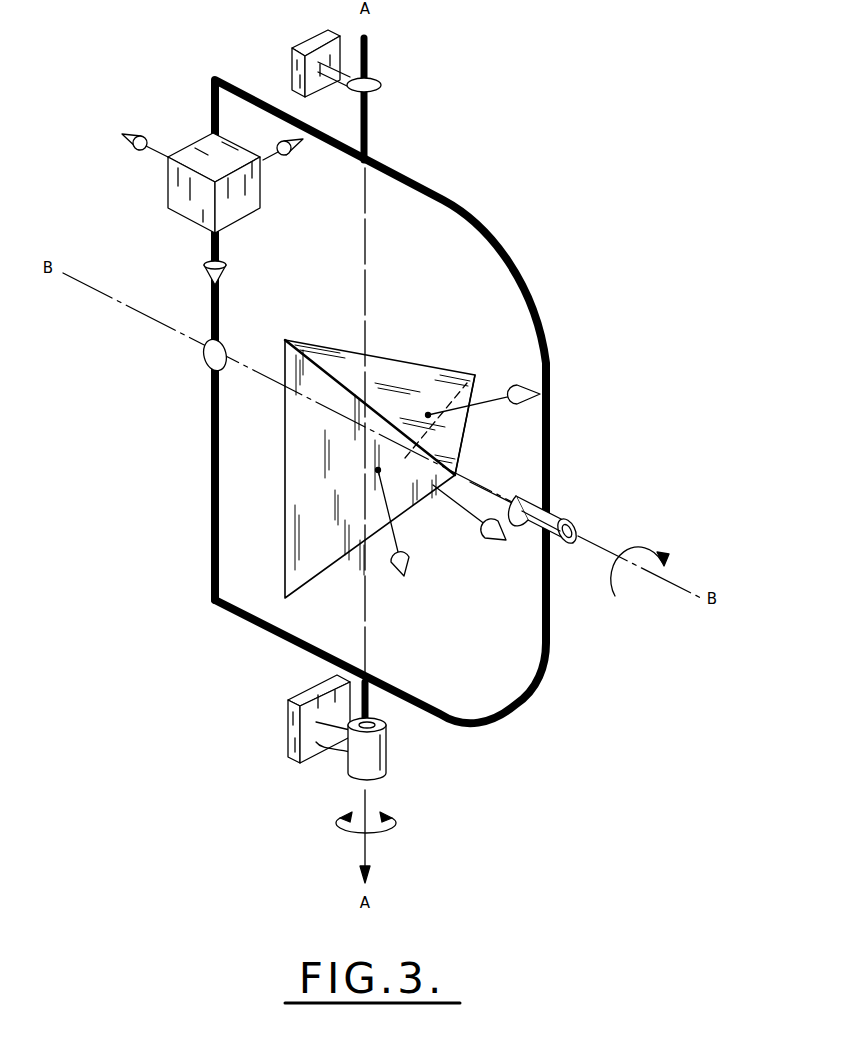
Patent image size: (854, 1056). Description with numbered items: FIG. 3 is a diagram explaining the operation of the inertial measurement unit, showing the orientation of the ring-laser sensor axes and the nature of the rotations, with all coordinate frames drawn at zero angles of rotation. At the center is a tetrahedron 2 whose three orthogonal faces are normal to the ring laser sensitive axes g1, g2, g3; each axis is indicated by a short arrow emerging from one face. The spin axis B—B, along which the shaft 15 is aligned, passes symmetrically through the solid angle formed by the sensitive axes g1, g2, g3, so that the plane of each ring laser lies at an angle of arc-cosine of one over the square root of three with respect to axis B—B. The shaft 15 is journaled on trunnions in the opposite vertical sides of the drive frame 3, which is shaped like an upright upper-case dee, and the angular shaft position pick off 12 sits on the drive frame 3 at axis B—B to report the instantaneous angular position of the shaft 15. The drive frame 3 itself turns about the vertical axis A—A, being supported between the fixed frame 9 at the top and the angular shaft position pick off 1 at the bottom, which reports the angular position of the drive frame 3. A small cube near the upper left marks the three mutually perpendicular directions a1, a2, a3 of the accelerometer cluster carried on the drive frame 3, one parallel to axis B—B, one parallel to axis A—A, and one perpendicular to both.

The angular shaft position pick off 1 is at (388, 742).
The prism 2 is at (380, 469).
The drive frame 3 is at (448, 200).
The fixed frame 9 is at (305, 43).
The angular shaft position pick off 12 is at (574, 511).
The shaft 15 is at (487, 487).
The light beam a1 is at (128, 134).
The light beam a2 is at (291, 155).
The light beam a3 is at (227, 272).
The ring laser sensitive axis g1 is at (522, 384).
The ring laser sensitive axis g2 is at (414, 556).
The ring laser sensitive axis g3 is at (487, 538).